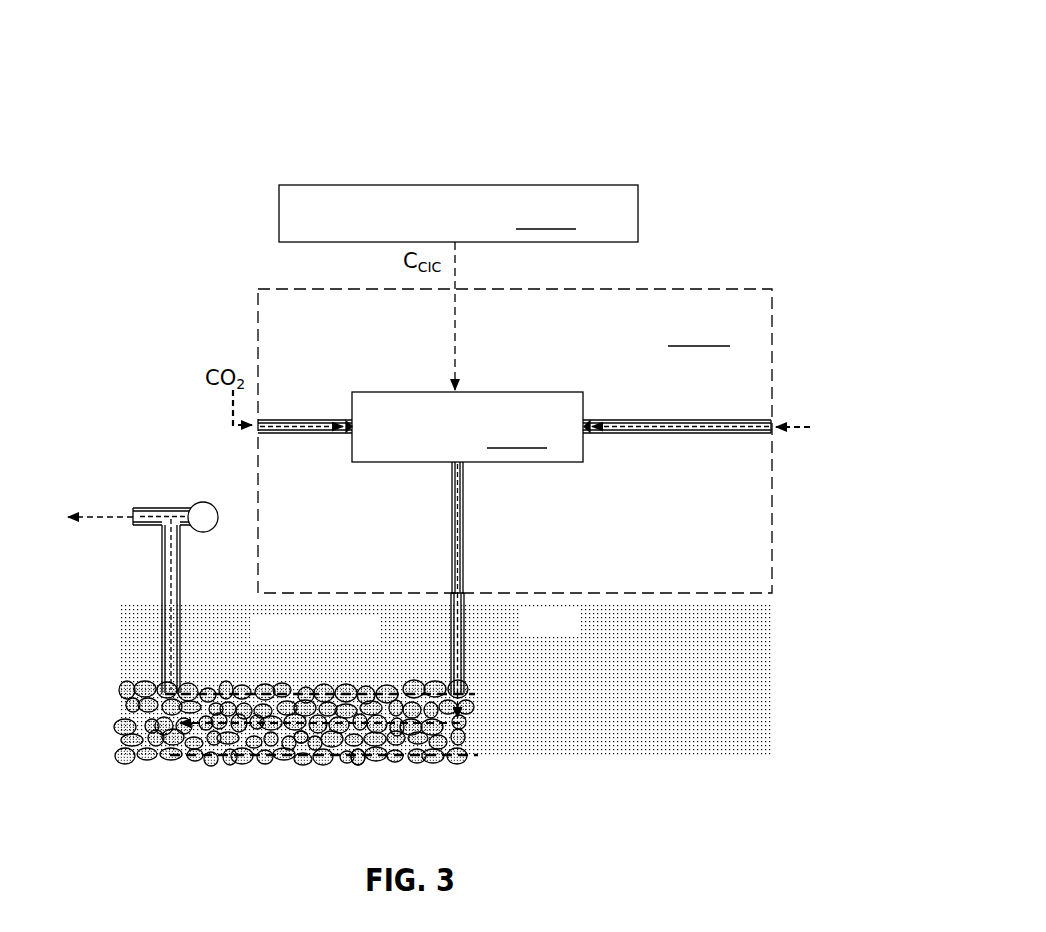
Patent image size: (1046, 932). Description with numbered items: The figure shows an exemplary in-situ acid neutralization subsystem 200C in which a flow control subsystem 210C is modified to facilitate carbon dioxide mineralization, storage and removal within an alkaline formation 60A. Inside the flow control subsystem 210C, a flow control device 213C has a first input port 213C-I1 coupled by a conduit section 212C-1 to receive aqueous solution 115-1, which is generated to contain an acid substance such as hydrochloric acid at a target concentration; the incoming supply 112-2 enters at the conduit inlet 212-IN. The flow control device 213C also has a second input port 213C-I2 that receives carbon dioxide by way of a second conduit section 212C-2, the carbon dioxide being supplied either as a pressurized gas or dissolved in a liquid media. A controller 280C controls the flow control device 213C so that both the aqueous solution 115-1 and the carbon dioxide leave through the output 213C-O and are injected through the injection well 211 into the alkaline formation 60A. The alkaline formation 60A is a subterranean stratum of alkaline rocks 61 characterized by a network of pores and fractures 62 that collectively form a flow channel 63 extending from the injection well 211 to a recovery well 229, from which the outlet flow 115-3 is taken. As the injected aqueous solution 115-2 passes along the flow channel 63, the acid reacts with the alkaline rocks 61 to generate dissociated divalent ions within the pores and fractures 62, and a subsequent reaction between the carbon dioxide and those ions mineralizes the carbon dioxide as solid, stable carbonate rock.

The in-situ acid neutralization subsystem 200C is at (238, 88).
The controller 280C is at (458, 213).
The flow control subsystem 210C is at (515, 441).
The flow control device 213C is at (467, 427).
The second input port 213C-I2 is at (348, 420).
The first input port 213C-I1 is at (592, 424).
The output of flow control device 213C-O is at (466, 466).
The conduit section 212C-1 is at (759, 421).
The second conduit section 212C-2 is at (277, 434).
The conduit inlet 212-IN is at (768, 439).
The input flow 112-2 is at (826, 429).
The aqueous solution 115-1 is at (452, 556).
The injected aqueous solution 115-2 is at (312, 715).
The outlet flow 115-3 is at (100, 515).
The recovery well 229 is at (162, 583).
The injection well 211 is at (467, 636).
The alkaline formation 60A is at (110, 702).
The alkaline rocks 61 is at (316, 752).
The pores and/or fractures 62 is at (380, 757).
The flow channel 63 is at (487, 733).